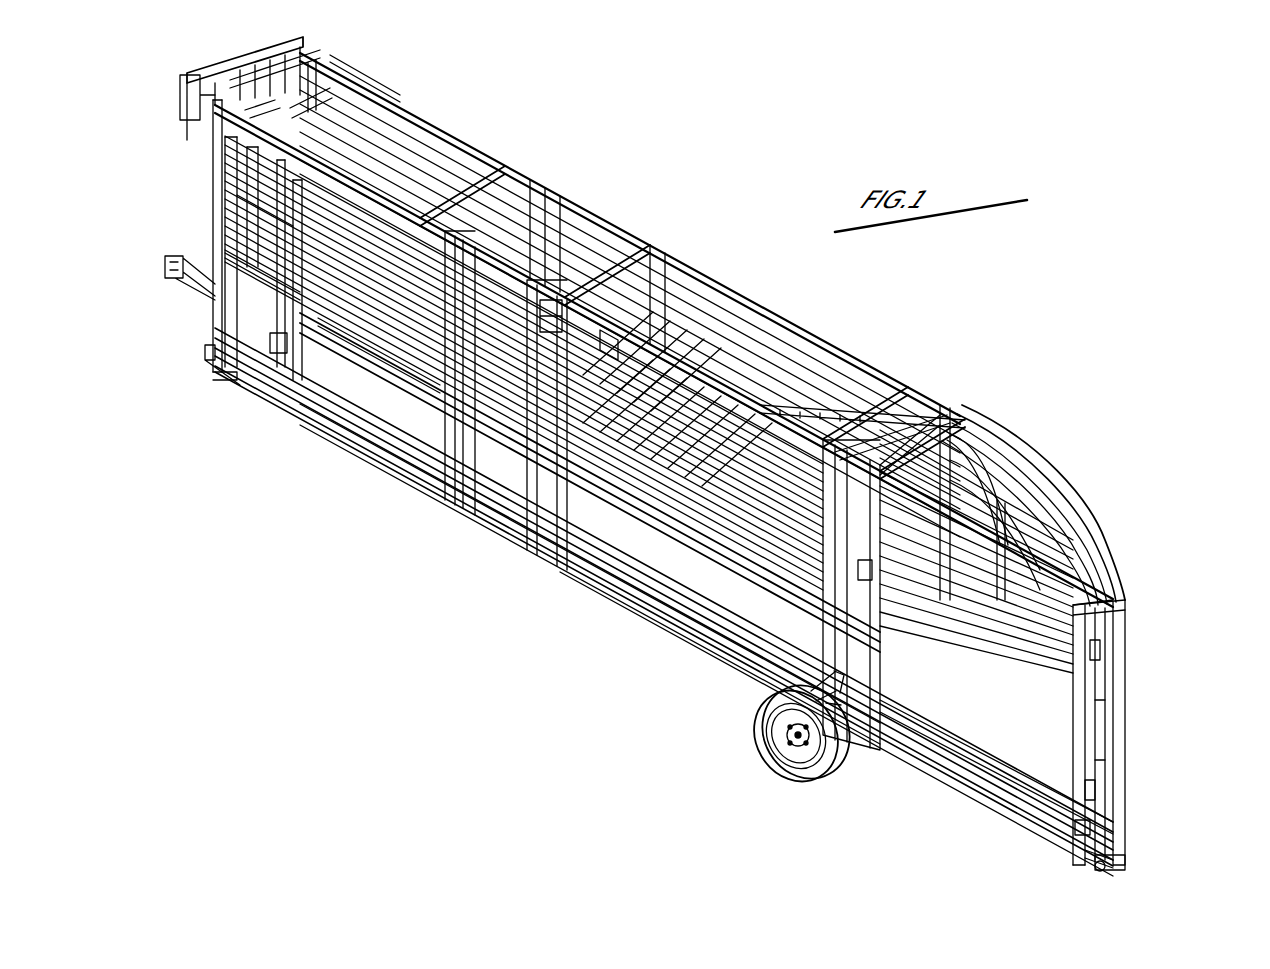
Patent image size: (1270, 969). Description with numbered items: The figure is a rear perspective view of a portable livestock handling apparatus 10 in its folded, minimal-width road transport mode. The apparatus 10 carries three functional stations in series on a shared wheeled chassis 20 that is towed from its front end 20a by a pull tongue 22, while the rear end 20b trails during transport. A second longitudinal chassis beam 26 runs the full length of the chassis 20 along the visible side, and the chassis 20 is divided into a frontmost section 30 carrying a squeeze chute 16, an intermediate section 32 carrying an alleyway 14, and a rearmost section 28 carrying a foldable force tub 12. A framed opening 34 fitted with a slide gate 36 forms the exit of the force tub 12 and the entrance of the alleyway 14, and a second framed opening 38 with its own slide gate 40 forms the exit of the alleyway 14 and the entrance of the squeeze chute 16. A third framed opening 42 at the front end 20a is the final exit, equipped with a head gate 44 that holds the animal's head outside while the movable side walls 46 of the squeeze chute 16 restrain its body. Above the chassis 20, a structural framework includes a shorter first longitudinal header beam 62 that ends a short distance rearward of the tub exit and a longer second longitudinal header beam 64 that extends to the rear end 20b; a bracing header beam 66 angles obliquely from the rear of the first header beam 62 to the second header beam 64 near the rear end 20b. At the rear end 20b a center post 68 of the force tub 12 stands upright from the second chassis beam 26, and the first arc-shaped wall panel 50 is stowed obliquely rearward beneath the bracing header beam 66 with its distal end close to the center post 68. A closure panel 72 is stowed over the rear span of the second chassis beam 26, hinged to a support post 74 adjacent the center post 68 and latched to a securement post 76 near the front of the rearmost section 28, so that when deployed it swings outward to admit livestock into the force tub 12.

The portable livestock handling apparatus 10 is at (1005, 300).
The foldable force tub 12 is at (1082, 497).
The alleyway 14 is at (855, 352).
The squeeze chute 16 is at (478, 140).
The chassis 20 is at (597, 584).
The front end of the chassis 20a is at (205, 350).
The rear end of the chassis 20b is at (1132, 878).
The pull tongue 22 is at (170, 252).
The second longitudinal chassis beam 26 is at (713, 637).
The rearmost section of the chassis 28 is at (985, 795).
The frontmost section of the chassis 30 is at (293, 402).
The intermediate section of the chassis 32 is at (653, 602).
The framed opening 34 is at (905, 445).
The slide gate 36 is at (967, 460).
The framed opening 38 is at (640, 330).
The slide gate 40 is at (665, 337).
The framed opening 42 is at (310, 113).
The head gate 44 is at (206, 318).
The movable side walls 46 is at (393, 397).
The first arc-shaped wall panel 50 is at (1090, 540).
The first longitudinal header beam 62 is at (815, 340).
The second longitudinal header beam 64 is at (1100, 656).
The bracing header beam 66 is at (1003, 487).
The center post 68 is at (1115, 752).
The closure panel 72 is at (950, 720).
The support post 74 is at (1073, 826).
The securement post 76 is at (860, 622).